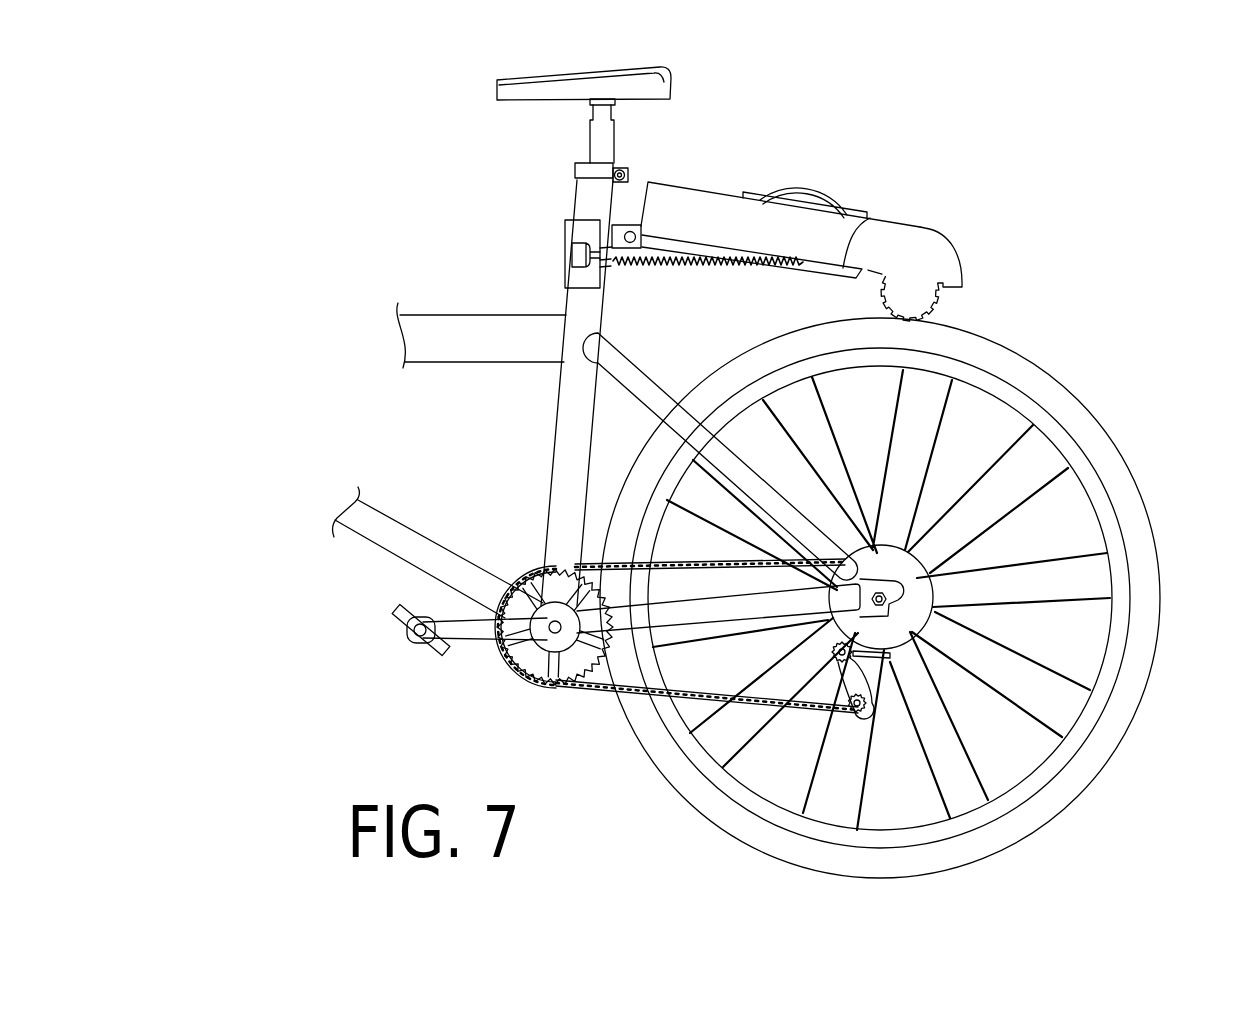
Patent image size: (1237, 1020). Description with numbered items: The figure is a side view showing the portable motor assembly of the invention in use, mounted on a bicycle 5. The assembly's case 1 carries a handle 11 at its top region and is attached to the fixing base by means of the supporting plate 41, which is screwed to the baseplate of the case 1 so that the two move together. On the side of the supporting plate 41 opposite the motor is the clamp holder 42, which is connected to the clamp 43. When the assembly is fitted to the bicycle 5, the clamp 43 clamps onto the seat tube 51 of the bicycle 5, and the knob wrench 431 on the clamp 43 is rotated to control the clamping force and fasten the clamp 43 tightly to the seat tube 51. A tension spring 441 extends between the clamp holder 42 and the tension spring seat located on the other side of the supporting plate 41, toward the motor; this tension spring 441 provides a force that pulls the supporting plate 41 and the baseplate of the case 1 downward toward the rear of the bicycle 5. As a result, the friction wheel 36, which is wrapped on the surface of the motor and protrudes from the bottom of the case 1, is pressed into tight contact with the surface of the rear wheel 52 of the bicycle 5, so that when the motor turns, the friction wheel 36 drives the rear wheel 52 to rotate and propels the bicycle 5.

The bicycle 5 is at (310, 226).
The seat tube 51 is at (583, 192).
The clamp 43 is at (575, 218).
The knob wrench 431 is at (574, 250).
The clamp holder 42 is at (625, 225).
The tension spring 441 is at (684, 266).
The case 1 is at (700, 200).
The handle 11 is at (815, 186).
The supporting plate 41 is at (870, 218).
The friction wheel 36 is at (950, 303).
The rear wheel 52 is at (1103, 443).